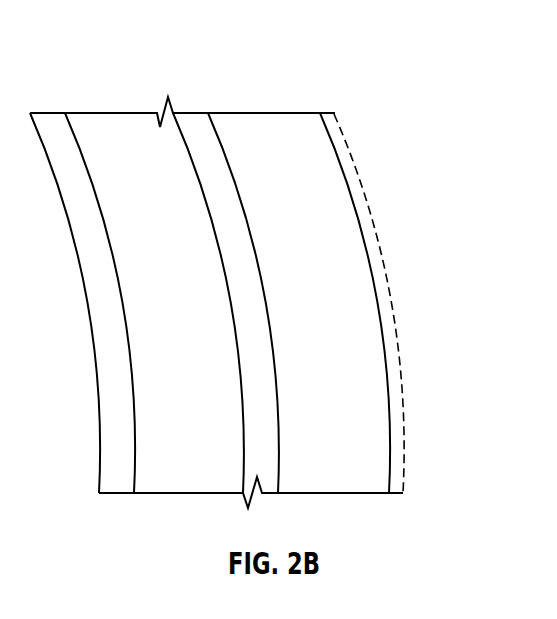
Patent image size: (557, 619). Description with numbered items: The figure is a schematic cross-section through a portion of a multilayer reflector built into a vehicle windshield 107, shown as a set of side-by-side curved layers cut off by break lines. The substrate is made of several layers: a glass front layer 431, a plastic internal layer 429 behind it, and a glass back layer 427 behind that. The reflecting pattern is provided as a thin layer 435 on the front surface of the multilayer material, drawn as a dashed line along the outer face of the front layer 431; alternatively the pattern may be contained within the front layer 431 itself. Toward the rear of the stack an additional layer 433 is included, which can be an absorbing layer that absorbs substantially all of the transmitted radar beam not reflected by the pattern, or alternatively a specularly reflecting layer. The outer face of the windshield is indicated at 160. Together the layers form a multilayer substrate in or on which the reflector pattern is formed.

The windshield 107 is at (356, 518).
The outer surface 160 is at (388, 221).
The back layer 427 is at (131, 122).
The internal layer 429 is at (196, 122).
The front layer 431 is at (297, 122).
The additional layer 433 is at (93, 279).
The layer including the pattern 435 is at (350, 148).